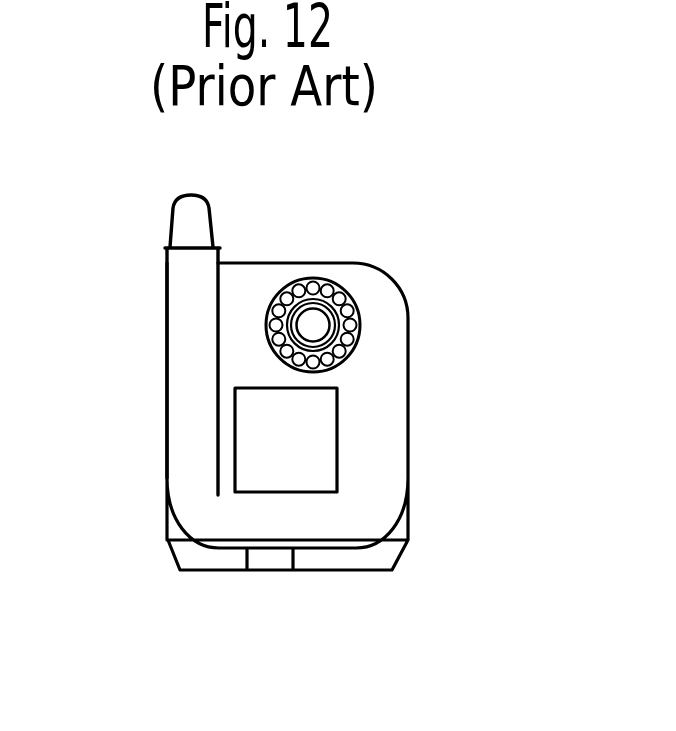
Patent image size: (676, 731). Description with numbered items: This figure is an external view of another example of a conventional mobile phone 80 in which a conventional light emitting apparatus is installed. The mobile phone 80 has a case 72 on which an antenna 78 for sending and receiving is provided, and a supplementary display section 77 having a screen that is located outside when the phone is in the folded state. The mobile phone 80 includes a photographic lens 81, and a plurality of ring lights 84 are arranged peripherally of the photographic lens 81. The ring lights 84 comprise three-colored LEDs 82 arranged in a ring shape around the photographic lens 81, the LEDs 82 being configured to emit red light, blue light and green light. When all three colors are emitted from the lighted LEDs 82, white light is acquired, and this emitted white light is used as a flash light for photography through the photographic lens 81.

The case 72 is at (408, 460).
The supplementary display section 77 is at (303, 470).
The antenna 78 is at (183, 212).
The mobile phone 80 is at (295, 398).
The photographic lens 81 is at (310, 320).
The three-colored LEDs 82 is at (353, 320).
The ring lights 84 is at (375, 352).